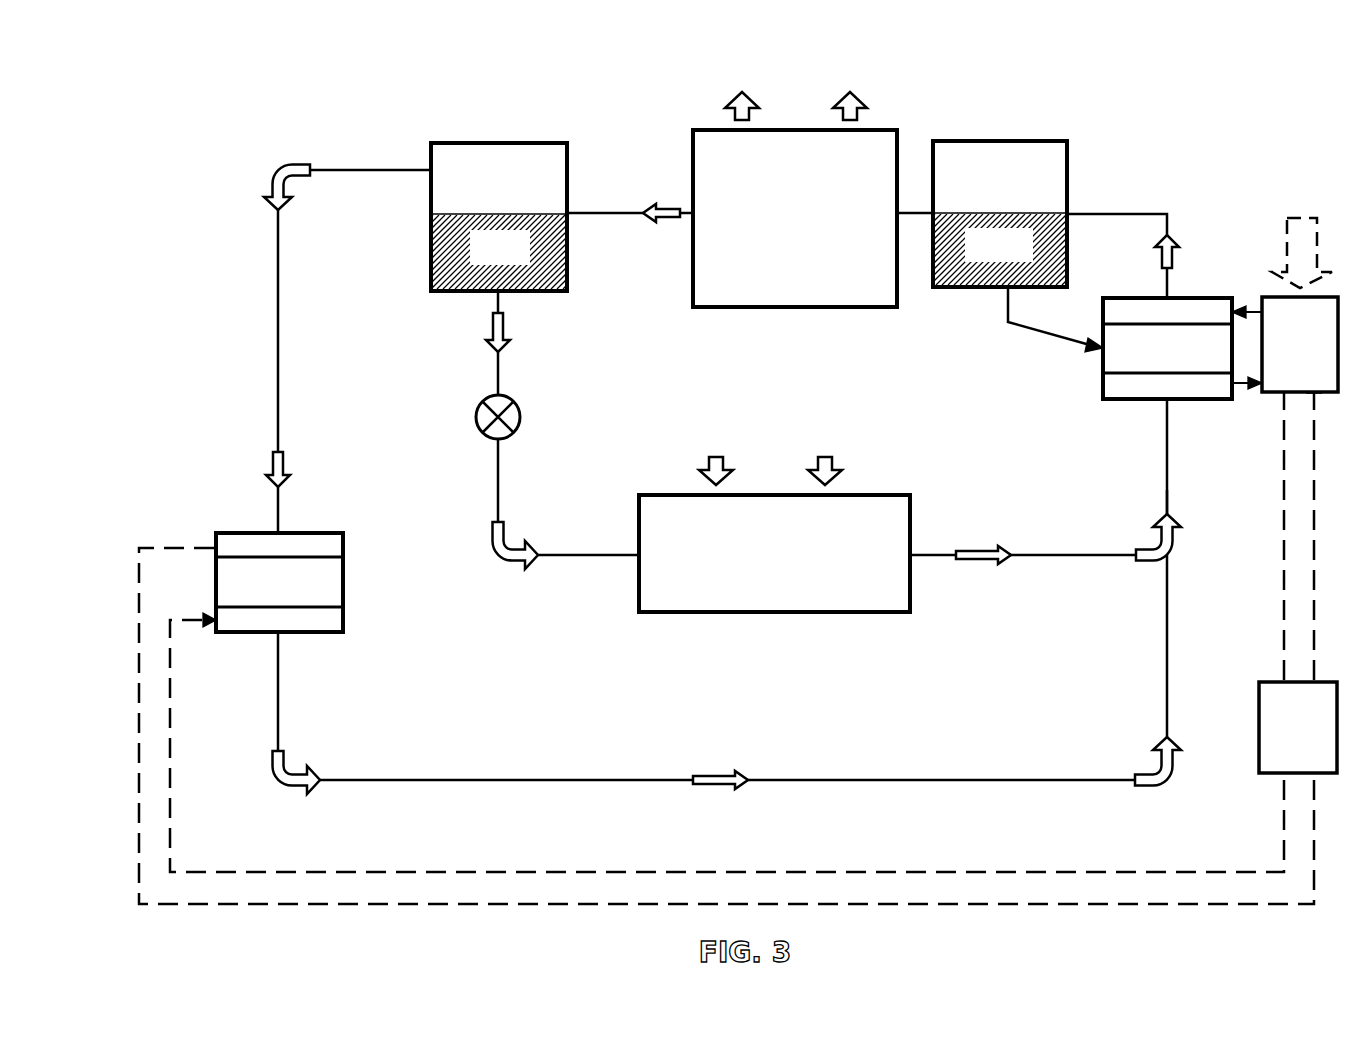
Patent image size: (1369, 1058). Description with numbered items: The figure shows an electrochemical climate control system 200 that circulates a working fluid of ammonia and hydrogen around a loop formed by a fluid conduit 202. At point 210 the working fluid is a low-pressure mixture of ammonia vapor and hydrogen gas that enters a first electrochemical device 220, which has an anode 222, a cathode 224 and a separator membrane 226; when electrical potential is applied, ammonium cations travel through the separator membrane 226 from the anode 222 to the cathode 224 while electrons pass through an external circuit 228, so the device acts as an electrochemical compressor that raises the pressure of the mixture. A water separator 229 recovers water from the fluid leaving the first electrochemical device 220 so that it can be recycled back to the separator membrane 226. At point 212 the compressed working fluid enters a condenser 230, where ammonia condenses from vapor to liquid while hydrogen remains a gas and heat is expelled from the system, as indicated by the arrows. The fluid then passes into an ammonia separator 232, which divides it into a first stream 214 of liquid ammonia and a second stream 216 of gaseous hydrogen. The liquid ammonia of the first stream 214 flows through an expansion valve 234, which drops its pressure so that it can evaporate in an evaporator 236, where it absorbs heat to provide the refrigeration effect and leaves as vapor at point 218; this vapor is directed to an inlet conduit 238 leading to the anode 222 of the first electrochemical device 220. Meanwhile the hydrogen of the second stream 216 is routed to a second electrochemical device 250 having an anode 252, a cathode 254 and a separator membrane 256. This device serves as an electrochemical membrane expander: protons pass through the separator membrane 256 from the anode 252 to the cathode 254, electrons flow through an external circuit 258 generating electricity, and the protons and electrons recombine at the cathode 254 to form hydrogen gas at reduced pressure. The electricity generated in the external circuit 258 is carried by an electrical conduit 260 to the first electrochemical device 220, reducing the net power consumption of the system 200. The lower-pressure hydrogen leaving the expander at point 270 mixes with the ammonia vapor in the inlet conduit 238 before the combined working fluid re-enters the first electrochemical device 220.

The electrochemical climate control system 200 is at (320, 90).
The fluid conduit 202 is at (610, 213).
The point in the fluid conduit 210 is at (1149, 472).
The point exiting first electrochemical device 212 is at (1097, 224).
The first stream 214 is at (480, 382).
The second stream 216 is at (260, 305).
The point exiting evaporator 218 is at (1059, 565).
The first electrochemical device 220 is at (1200, 298).
The anode 222 is at (1103, 400).
The cathode 224 is at (1118, 310).
The separator membrane 226 is at (1145, 360).
The external circuit 228 is at (1278, 356).
The water separator 229 is at (1018, 143).
The condenser 230 is at (773, 230).
The ammonia separator 232 is at (523, 143).
The expansion valve 234 is at (490, 441).
The evaporator 236 is at (751, 565).
The inlet conduit 238 is at (1170, 510).
The second electrochemical device 250 is at (298, 533).
The anode 252 is at (345, 533).
The cathode 254 is at (345, 622).
The separator membrane 256 is at (258, 594).
The external circuit 258 is at (186, 548).
The electrical conduit 260 is at (1276, 739).
The point exiting second electrochemical device 270 is at (593, 790).